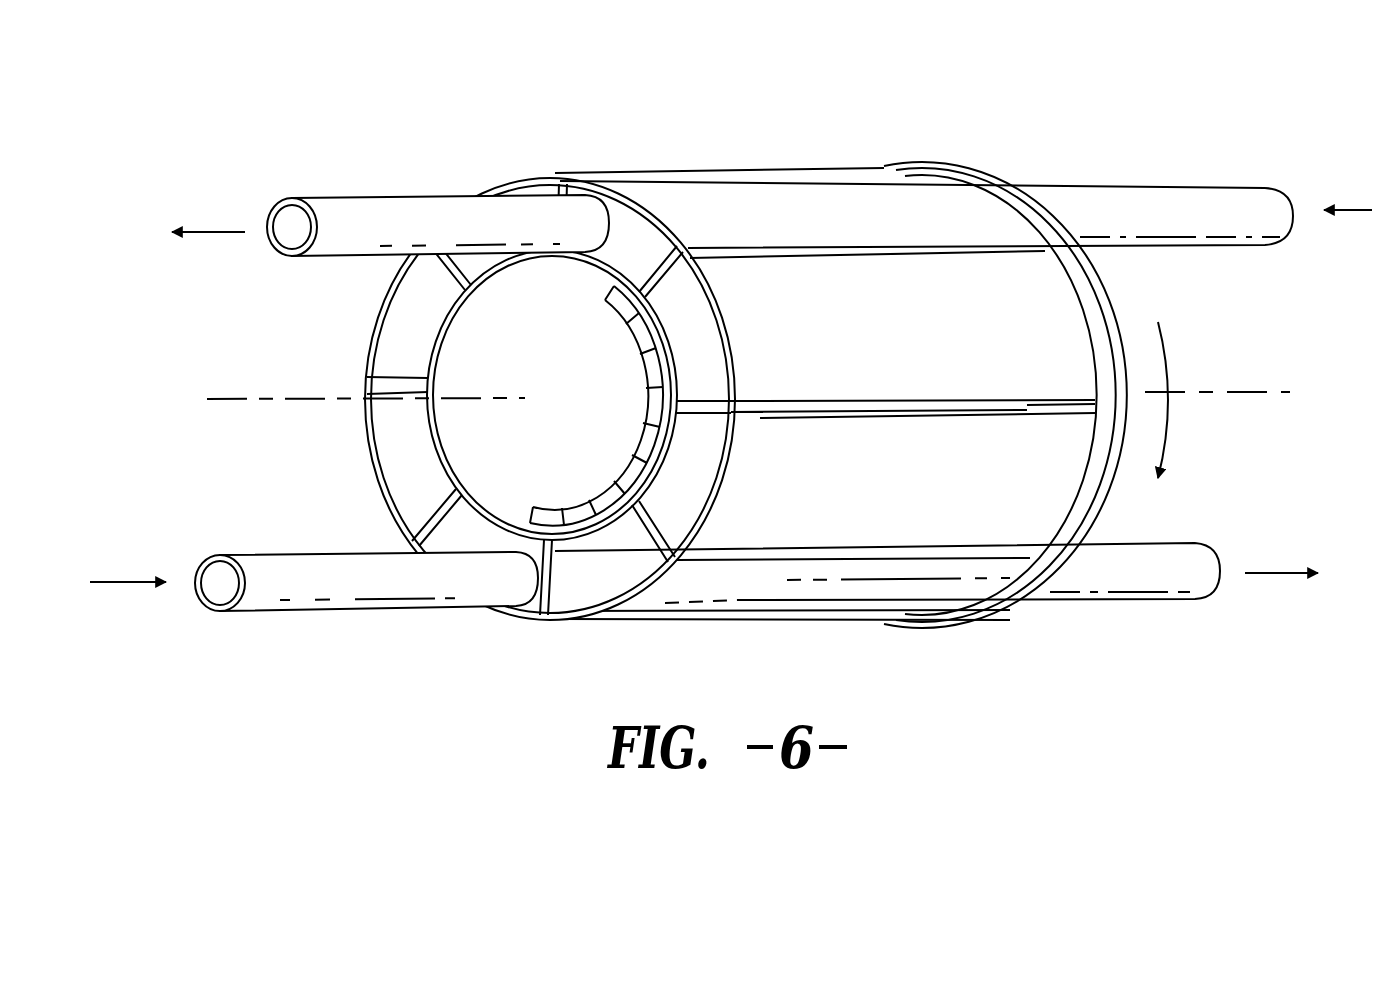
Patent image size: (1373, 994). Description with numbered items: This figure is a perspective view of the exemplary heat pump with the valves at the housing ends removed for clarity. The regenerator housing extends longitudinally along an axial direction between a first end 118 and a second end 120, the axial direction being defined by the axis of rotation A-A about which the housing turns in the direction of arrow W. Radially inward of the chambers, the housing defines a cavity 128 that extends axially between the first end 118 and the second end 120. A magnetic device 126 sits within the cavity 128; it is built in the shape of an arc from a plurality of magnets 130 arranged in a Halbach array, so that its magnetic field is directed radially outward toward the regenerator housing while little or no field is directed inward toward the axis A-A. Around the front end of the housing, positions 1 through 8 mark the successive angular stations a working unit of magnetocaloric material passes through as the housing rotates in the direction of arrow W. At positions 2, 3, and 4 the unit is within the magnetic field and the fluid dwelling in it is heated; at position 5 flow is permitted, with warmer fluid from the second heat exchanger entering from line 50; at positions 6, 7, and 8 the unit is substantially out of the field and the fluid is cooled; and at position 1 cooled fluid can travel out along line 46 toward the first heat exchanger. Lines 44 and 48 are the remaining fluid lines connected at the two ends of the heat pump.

The position 1 is at (597, 221).
The position 2 is at (669, 300).
The position 3 is at (703, 446).
The position 4 is at (632, 543).
The position 5 is at (465, 535).
The position 6 is at (430, 493).
The position 7 is at (397, 349).
The position 8 is at (545, 190).
The line 44 is at (285, 583).
The line 46 is at (360, 213).
The line 48 is at (1128, 575).
The line 50 is at (1200, 207).
The first end 118 is at (470, 168).
The second end 120 is at (910, 140).
The magnetic device 126 is at (605, 293).
The cavity 128 is at (455, 413).
The magnets 130 is at (633, 326).
The axis of rotation A is at (749, 392).
The arrow W is at (1152, 380).